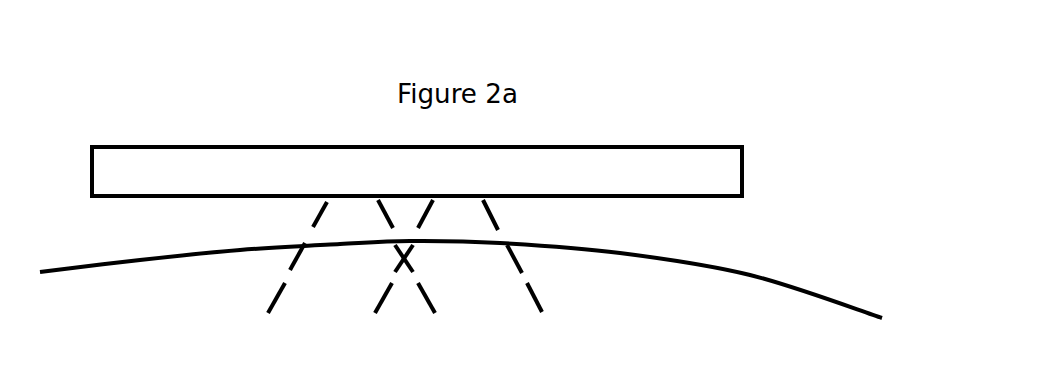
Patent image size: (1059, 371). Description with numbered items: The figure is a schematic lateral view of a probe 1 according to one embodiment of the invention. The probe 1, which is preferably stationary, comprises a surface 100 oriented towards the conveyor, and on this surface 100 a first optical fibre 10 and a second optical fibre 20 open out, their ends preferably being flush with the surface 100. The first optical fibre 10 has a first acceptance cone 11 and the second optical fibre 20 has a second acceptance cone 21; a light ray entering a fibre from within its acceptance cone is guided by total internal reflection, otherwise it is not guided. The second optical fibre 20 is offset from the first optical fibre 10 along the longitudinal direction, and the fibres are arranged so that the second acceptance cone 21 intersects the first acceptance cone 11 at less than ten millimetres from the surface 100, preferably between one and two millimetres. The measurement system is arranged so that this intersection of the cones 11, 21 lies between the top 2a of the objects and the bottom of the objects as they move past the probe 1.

The probe 1 is at (424, 184).
The surface 100 is at (469, 190).
The first optical fibre 10 is at (326, 208).
The first acceptance cone 11 is at (312, 220).
The second optical fibre 20 is at (491, 209).
The second acceptance cone 21 is at (503, 243).
The top of the objects 2a is at (54, 267).